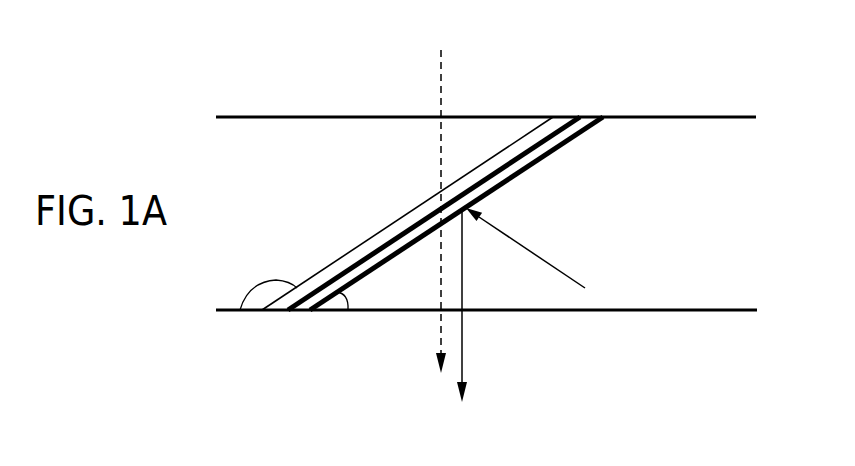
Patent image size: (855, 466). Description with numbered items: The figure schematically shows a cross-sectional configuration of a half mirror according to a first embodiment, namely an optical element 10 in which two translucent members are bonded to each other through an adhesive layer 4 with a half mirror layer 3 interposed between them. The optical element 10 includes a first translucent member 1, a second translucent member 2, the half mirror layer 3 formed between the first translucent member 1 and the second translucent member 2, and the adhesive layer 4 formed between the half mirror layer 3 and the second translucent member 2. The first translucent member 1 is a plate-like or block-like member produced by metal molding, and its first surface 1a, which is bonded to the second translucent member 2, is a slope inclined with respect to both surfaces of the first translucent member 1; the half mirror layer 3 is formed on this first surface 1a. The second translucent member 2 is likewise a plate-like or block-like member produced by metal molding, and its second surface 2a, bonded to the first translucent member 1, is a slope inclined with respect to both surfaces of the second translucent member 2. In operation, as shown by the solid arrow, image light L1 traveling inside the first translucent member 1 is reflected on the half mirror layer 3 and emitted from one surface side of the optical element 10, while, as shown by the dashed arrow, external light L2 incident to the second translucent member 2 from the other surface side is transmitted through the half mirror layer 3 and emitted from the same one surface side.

The first translucent member 1 is at (661, 292).
The first surface 1a is at (350, 312).
The second translucent member 2 is at (299, 137).
The second surface 2a is at (241, 311).
The half mirror layer 3 is at (541, 143).
The adhesive layer 4 is at (492, 157).
The optical element 10 is at (486, 206).
The image light L1 is at (541, 257).
The external light L2 is at (445, 198).